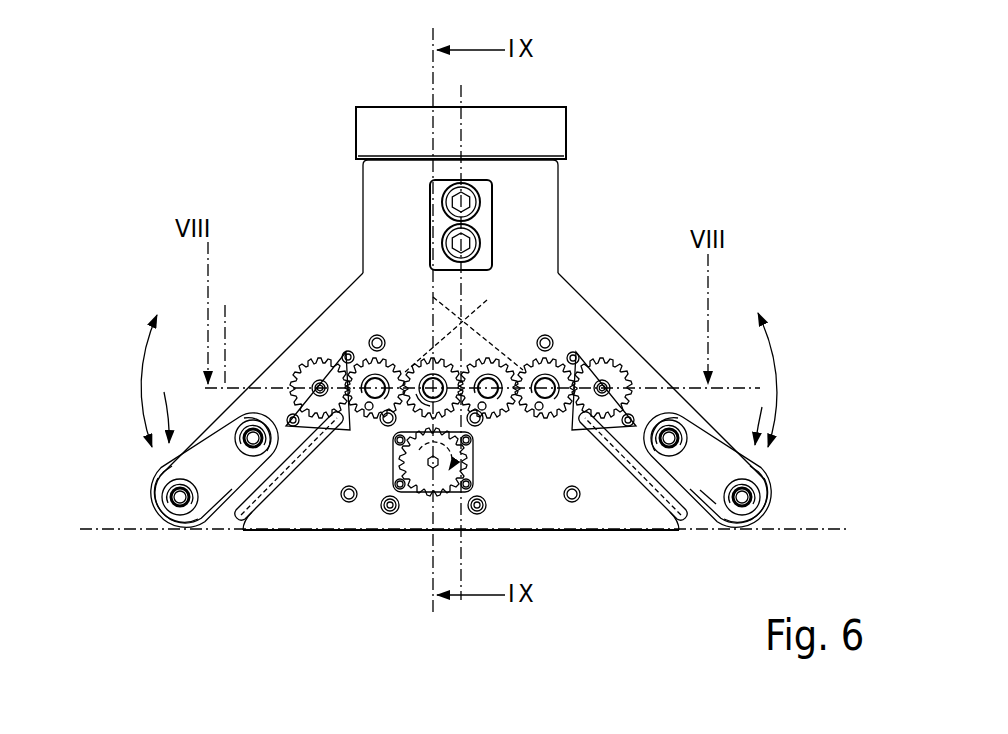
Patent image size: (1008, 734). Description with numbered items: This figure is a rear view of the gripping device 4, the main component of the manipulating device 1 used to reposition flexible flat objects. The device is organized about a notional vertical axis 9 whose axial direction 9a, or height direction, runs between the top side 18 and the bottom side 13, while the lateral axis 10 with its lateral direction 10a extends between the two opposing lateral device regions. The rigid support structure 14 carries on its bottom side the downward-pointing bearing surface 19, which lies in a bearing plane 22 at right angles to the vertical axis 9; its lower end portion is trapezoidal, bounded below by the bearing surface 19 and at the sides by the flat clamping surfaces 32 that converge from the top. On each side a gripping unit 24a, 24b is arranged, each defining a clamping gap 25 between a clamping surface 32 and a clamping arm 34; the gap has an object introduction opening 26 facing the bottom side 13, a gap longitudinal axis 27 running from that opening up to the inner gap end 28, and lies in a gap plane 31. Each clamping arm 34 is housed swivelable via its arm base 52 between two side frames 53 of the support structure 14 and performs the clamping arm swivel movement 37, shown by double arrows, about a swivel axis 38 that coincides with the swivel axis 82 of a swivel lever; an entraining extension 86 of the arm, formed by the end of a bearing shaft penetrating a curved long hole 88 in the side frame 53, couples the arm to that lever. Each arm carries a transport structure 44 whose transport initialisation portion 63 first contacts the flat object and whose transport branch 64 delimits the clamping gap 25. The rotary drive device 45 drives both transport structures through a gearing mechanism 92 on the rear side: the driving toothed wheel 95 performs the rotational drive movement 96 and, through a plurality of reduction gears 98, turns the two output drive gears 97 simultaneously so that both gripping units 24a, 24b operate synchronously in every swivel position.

The manipulating device 1 is at (767, 210).
The gripping device 4 is at (584, 137).
The vertical axis 9 is at (506, 338).
The axial direction 9a is at (462, 100).
The lateral axis 10 is at (240, 334).
The lateral direction 10a is at (240, 334).
The bottom side 13 is at (613, 542).
The support structure 14 is at (533, 275).
The top side 18 is at (395, 92).
The bearing surface 19 is at (350, 536).
The bearing plane 22 is at (790, 529).
The first gripping unit 24a is at (782, 460).
The second gripping unit 24b is at (161, 472).
The clamping gap 25 is at (246, 490).
The object introduction opening 26 is at (236, 527).
The gap longitudinal axis 27 is at (454, 572).
The gap plane 31 is at (230, 523).
The inner gap end 28 is at (300, 392).
The clamping surface 32 is at (454, 522).
The clamping arm 34 is at (462, 407).
The clamping arm swivel movement 37 is at (142, 373).
The swivel axis 38 is at (461, 331).
The swivel axis of swivel lever 82 is at (320, 382).
The transport structure 44 is at (183, 532).
The rotary drive device 45 is at (407, 505).
The arm base 52 is at (714, 500).
The side frame 53 is at (343, 314).
The transport initialisation portion 63 is at (195, 530).
The transport branch 64 is at (228, 488).
The entraining extension 86 is at (232, 424).
The curved long hole 88 is at (249, 428).
The gearing mechanism 92 is at (485, 348).
The driving toothed wheel 95 is at (450, 482).
The rotational drive movement 96 is at (432, 486).
The output drive gear 97 is at (464, 342).
The reduction gears 98 is at (423, 352).